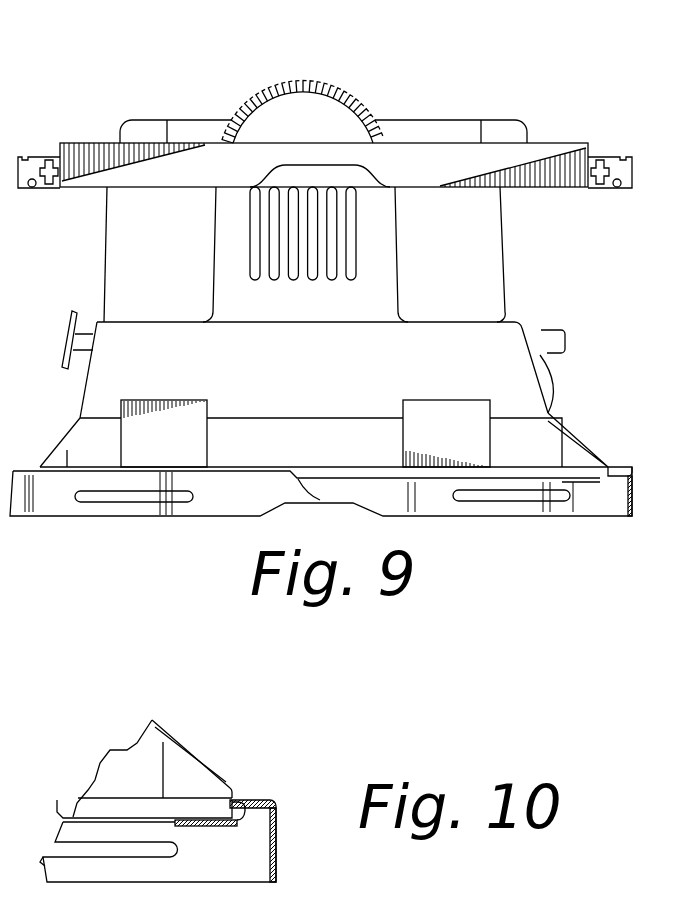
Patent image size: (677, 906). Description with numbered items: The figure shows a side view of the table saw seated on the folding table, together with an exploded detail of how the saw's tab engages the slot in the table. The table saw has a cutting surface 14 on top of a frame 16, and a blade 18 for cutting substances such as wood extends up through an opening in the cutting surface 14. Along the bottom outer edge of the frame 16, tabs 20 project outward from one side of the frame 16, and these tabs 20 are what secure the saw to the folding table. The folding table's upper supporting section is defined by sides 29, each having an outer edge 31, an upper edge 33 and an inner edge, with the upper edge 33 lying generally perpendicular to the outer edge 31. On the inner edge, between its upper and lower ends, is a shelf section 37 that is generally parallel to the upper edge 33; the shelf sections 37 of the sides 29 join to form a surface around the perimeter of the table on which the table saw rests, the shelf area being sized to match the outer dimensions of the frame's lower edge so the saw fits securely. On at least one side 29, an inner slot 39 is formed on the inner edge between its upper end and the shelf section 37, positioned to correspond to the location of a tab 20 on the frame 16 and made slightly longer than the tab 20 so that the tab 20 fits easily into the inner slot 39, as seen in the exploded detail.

In FIG. 9, the cutting surface 14 is at (578, 142).
In FIG. 9, the frame 16 is at (503, 248).
In FIG. 10, the frame 16 is at (173, 733).
In FIG. 9, the blade 18 is at (327, 120).
In FIG. 9, the tab 20 is at (607, 466).
In FIG. 10, the tab 20 is at (238, 803).
In FIG. 9, the side 29 is at (632, 490).
In FIG. 10, the side 29 is at (280, 820).
In FIG. 9, the outer edge 31 is at (633, 515).
In FIG. 10, the outer edge 31 is at (276, 848).
In FIG. 9, the upper edge 33 is at (620, 468).
In FIG. 10, the upper edge 33 is at (268, 802).
In FIG. 9, the shelf section 37 is at (577, 503).
In FIG. 10, the shelf section 37 is at (190, 827).
In FIG. 9, the inner slot 39 is at (612, 490).
In FIG. 10, the inner slot 39 is at (247, 827).